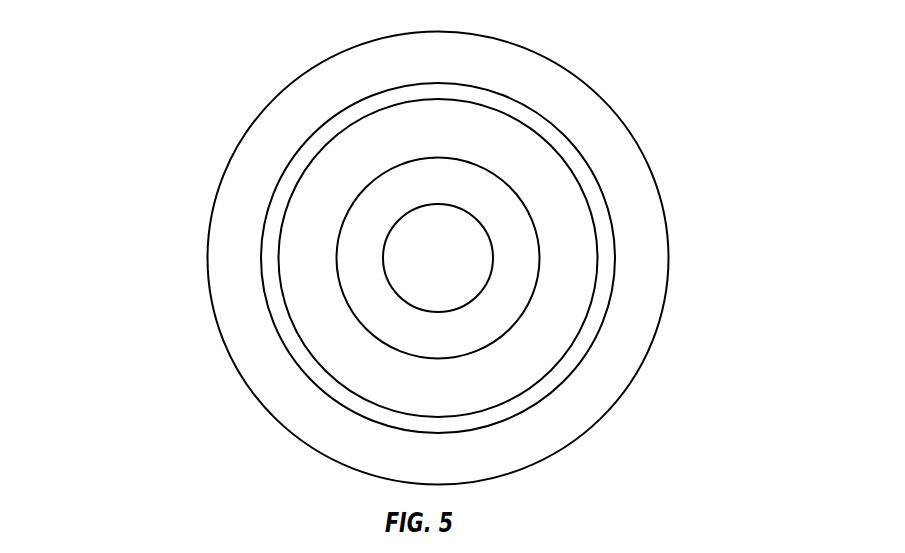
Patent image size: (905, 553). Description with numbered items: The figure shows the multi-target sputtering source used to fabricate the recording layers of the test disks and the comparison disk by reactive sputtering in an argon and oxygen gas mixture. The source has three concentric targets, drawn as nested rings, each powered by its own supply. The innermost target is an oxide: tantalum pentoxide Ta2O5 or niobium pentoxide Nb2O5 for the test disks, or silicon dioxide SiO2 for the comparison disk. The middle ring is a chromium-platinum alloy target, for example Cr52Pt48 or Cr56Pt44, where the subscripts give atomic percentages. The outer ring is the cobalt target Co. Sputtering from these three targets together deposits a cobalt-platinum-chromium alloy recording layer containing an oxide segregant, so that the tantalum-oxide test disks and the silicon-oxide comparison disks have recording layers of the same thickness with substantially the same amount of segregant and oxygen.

The outer target Co is at (337, 183).
The CrPt alloy middle target Cr52Pt48 is at (291, 286).
The CrPt alloy middle target Cr56Pt44 is at (137, 414).
The inner target SiO2 is at (597, 193).
The inner target Ta2O5 is at (597, 193).
The inner target Nb2O5 is at (468, 233).